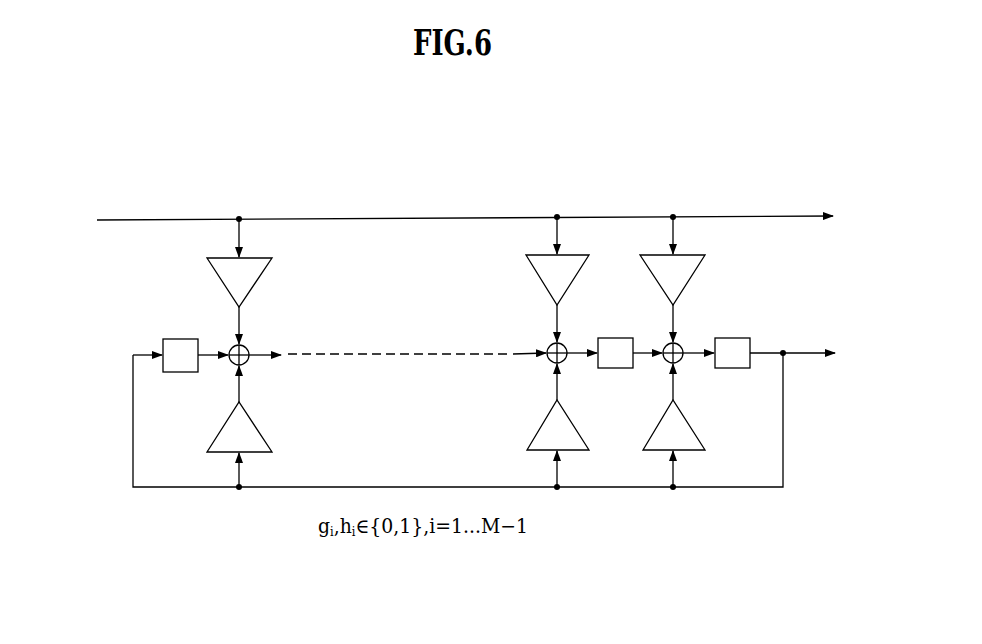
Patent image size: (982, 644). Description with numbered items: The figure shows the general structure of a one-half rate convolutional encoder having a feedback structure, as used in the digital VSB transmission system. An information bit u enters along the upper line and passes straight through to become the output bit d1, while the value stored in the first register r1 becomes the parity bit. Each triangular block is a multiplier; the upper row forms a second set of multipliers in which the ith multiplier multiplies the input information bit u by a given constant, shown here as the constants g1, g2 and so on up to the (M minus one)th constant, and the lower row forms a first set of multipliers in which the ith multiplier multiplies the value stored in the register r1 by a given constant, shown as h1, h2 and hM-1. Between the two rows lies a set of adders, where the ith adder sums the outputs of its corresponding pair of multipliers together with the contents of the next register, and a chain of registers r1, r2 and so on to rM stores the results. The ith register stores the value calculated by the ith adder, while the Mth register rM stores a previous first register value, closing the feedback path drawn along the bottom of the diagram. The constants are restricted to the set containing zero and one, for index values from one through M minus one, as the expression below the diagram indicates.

The information bit u is at (465, 206).
The output bit d1 is at (792, 271).
The element multiplier is at (275, 275).
The multiplier constant g2 is at (557, 280).
The multiplier constant g1 is at (672, 280).
The Mth register rM is at (180, 355).
The second register r2 is at (615, 353).
The first register r1 is at (732, 353).
The multiplier constant hM-1 is at (239, 428).
The multiplier constant h2 is at (558, 426).
The multiplier constant h1 is at (674, 426).